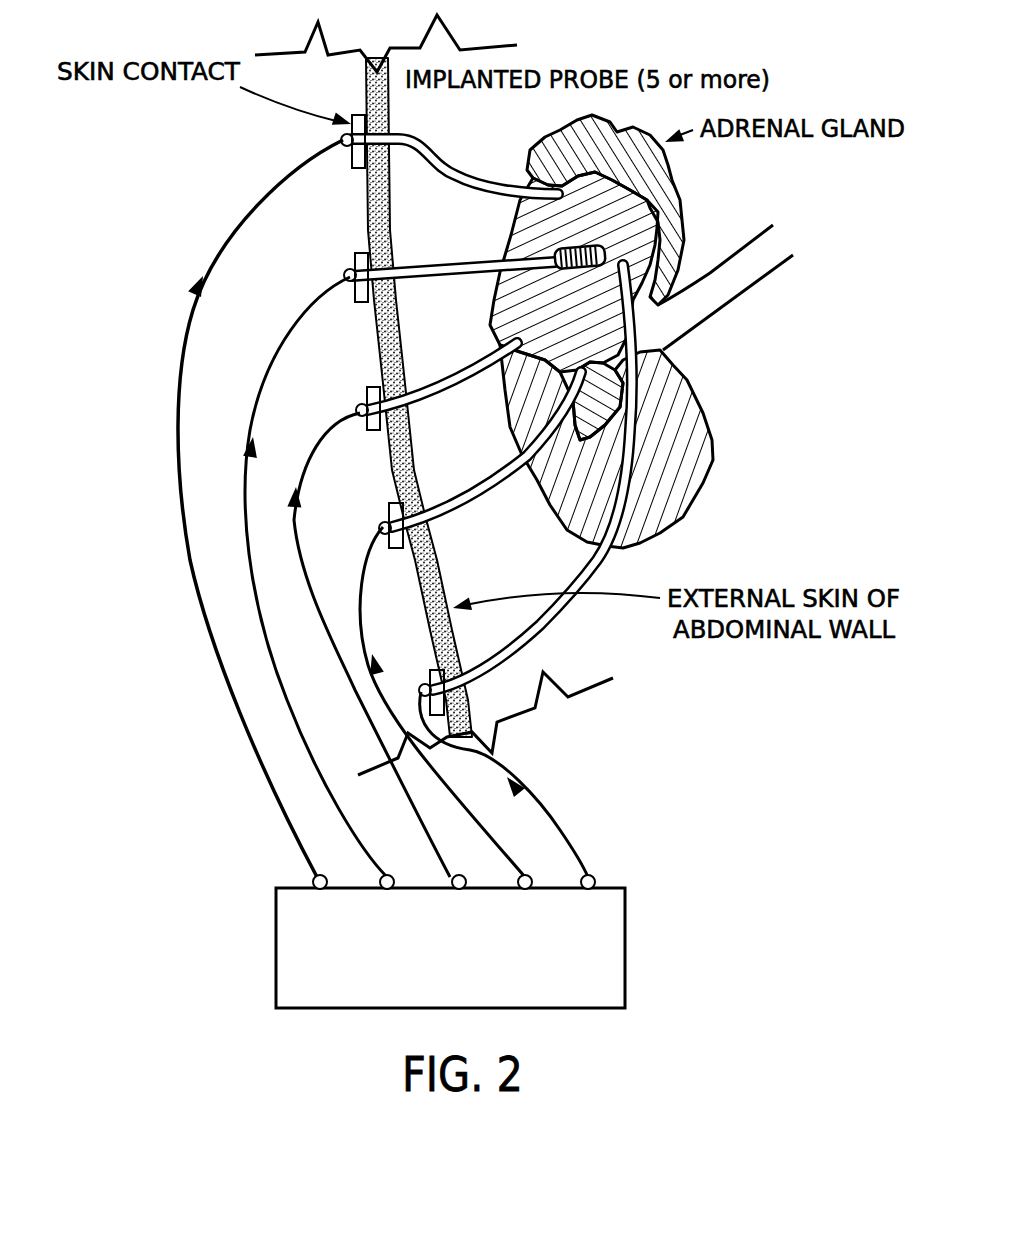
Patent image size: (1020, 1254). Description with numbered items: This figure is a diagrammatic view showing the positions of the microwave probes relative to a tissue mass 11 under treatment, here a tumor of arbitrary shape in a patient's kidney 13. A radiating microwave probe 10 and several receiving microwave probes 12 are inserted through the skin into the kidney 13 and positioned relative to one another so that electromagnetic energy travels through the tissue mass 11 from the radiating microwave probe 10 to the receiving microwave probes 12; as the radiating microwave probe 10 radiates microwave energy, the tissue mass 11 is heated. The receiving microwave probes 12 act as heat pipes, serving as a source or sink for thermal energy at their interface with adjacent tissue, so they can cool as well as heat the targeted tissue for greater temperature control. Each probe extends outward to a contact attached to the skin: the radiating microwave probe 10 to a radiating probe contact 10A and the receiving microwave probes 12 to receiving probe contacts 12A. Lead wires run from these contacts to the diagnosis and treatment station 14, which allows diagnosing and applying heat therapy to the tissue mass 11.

The radiating microwave probe 10 is at (433, 277).
The radiating probe contact 10A is at (357, 305).
The tissue mass 11 is at (577, 300).
The receiving microwave probe 12 is at (427, 173).
The receiving probe contact 12A is at (353, 170).
The kidney 13 is at (712, 481).
The diagnosis and treatment station 14 is at (276, 960).